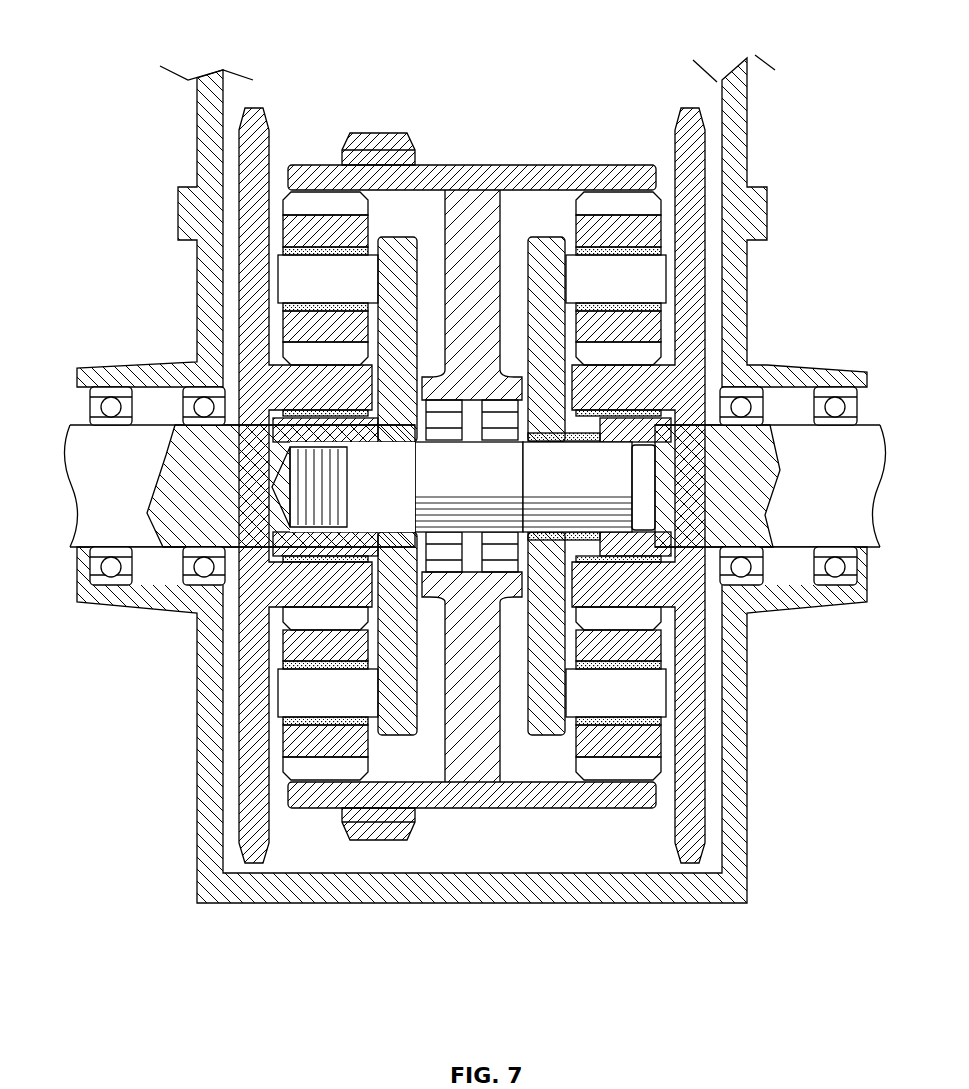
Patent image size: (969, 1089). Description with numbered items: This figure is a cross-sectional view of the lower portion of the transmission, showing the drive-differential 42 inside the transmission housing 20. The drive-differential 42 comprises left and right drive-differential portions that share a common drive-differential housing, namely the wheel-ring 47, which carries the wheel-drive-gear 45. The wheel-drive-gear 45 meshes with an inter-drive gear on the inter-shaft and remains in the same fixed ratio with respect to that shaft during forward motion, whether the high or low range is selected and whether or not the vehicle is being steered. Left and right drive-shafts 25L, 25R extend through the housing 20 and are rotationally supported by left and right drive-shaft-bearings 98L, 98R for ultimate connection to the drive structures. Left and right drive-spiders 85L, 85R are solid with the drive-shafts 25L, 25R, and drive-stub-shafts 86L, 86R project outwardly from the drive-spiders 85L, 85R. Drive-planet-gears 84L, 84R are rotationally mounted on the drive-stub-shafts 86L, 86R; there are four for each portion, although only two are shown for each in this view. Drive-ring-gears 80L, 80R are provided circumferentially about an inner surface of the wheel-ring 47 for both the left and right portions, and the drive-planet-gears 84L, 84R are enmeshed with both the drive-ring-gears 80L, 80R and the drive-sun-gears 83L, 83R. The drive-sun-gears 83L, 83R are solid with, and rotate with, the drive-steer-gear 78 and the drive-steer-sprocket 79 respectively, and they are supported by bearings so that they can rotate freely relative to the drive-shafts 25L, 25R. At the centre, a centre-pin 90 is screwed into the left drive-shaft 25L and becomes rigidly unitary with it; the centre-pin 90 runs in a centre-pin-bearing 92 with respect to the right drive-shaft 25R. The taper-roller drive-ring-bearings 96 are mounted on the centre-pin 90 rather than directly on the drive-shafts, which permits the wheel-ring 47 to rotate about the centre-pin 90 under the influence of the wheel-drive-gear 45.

The transmission housing 20 is at (747, 897).
The left drive-shaft 25L is at (146, 501).
The right drive-shaft 25R is at (851, 501).
The drive-differential 42 is at (150, 872).
The wheel-drive-gear 45 is at (366, 160).
The wheel-ring 47 is at (478, 200).
The drive-steer-gear 78 is at (250, 158).
The drive-steer-sprocket 79 is at (685, 160).
The left drive-ring-gear 80L is at (315, 780).
The right drive-ring-gear 80R is at (610, 780).
The left drive-sun-gear 83L is at (318, 390).
The right drive-sun-gear 83R is at (645, 580).
The left drive-planet-gears 84L is at (287, 228).
The right drive-planet-gears 84R is at (655, 233).
The left drive-spider 85L is at (398, 715).
The right drive-spider 85R is at (548, 725).
The left drive-stub-shafts 86L is at (283, 280).
The right drive-stub-shafts 86R is at (657, 282).
The centre-pin 90 is at (487, 486).
The centre-pin-bearing 92 is at (548, 432).
The taper-roller drive-ring-bearings 96 is at (438, 415).
The left drive-shaft-bearing 98L is at (178, 612).
The right drive-shaft-bearing 98R is at (822, 390).